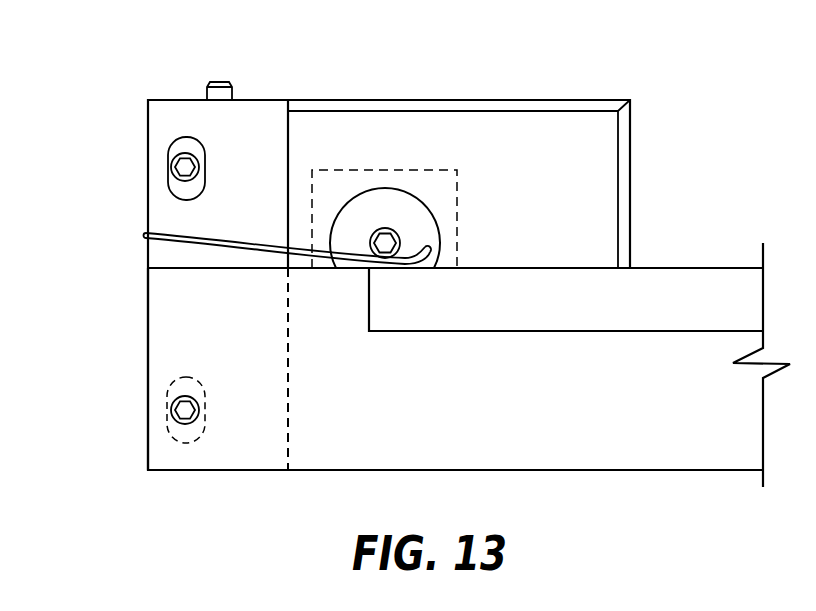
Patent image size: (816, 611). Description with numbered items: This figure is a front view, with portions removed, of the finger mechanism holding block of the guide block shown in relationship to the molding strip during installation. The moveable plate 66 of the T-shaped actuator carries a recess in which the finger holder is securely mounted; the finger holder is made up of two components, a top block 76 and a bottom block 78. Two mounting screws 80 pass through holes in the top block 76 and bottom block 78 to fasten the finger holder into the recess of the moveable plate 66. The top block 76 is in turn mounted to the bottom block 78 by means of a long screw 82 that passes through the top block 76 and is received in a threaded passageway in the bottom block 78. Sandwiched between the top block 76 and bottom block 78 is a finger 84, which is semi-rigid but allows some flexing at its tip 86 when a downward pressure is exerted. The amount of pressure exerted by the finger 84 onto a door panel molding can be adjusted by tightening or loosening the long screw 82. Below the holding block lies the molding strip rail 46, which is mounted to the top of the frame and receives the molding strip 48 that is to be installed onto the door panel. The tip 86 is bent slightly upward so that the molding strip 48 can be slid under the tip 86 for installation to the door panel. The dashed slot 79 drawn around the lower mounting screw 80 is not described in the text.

The molding strip rail 46 is at (650, 428).
The molding strip 48 is at (678, 288).
The moveable plate 66 is at (503, 127).
The top block 76 is at (148, 212).
The bottom block 78 is at (148, 320).
The slot 79 is at (172, 433).
The mounting screws 80 is at (185, 167).
The long screw 82 is at (218, 83).
The finger 84 is at (217, 252).
The tip 86 is at (427, 248).